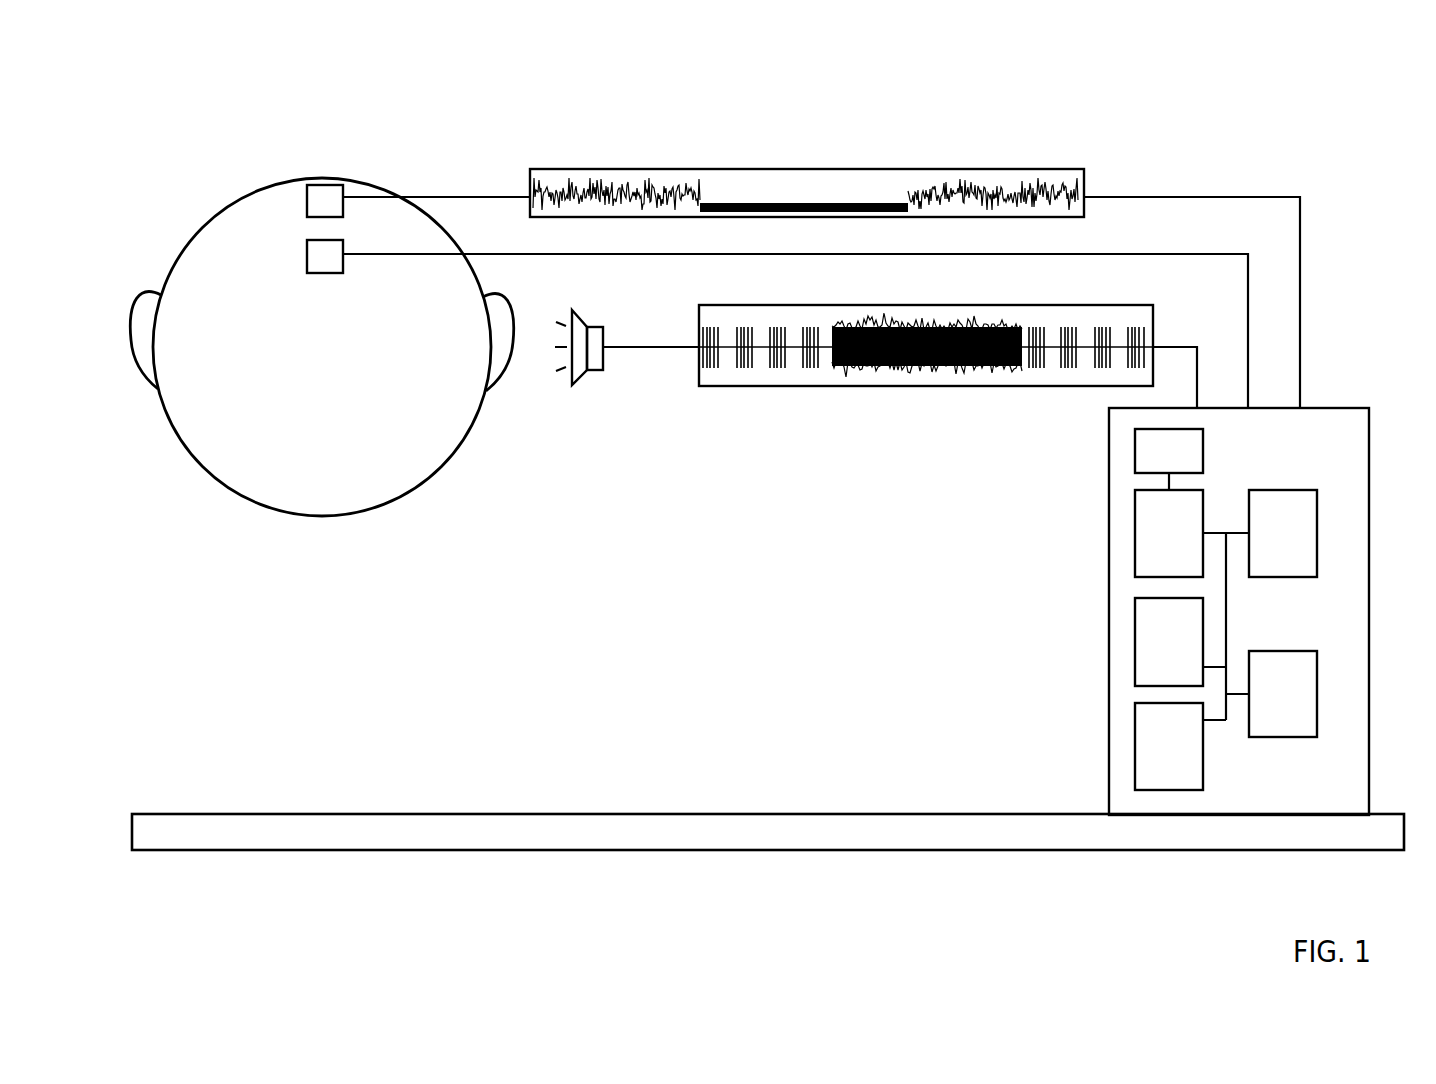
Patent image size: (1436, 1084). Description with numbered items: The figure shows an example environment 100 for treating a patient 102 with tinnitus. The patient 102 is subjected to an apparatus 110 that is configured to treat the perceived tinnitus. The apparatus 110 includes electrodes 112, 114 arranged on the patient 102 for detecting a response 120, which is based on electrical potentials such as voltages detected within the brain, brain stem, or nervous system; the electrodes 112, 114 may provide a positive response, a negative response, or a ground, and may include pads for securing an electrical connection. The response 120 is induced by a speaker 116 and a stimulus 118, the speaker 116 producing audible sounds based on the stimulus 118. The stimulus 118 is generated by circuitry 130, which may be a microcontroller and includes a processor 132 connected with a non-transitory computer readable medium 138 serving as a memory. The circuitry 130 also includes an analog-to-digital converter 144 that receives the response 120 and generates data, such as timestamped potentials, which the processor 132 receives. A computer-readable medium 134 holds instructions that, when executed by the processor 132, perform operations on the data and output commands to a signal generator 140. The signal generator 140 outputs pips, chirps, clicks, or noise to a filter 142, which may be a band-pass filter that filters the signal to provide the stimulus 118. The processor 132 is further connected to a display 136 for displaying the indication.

The environment 100 is at (170, 78).
The patient 102 is at (196, 205).
The apparatus 110 is at (1084, 120).
The electrode 112 is at (315, 192).
The electrode 114 is at (315, 250).
The speaker 116 is at (594, 330).
The stimulus 118 is at (819, 297).
The response 120 is at (697, 160).
The circuitry 130 is at (1119, 576).
The processor 132 is at (1186, 654).
The computer-readable medium 134 is at (1220, 722).
The display 136 is at (1300, 706).
The non-transitory computer readable medium 138 is at (1186, 758).
The signal generator 140 is at (1186, 546).
The filter 142 is at (1186, 466).
The analog-to-digital converter 144 is at (1300, 546).